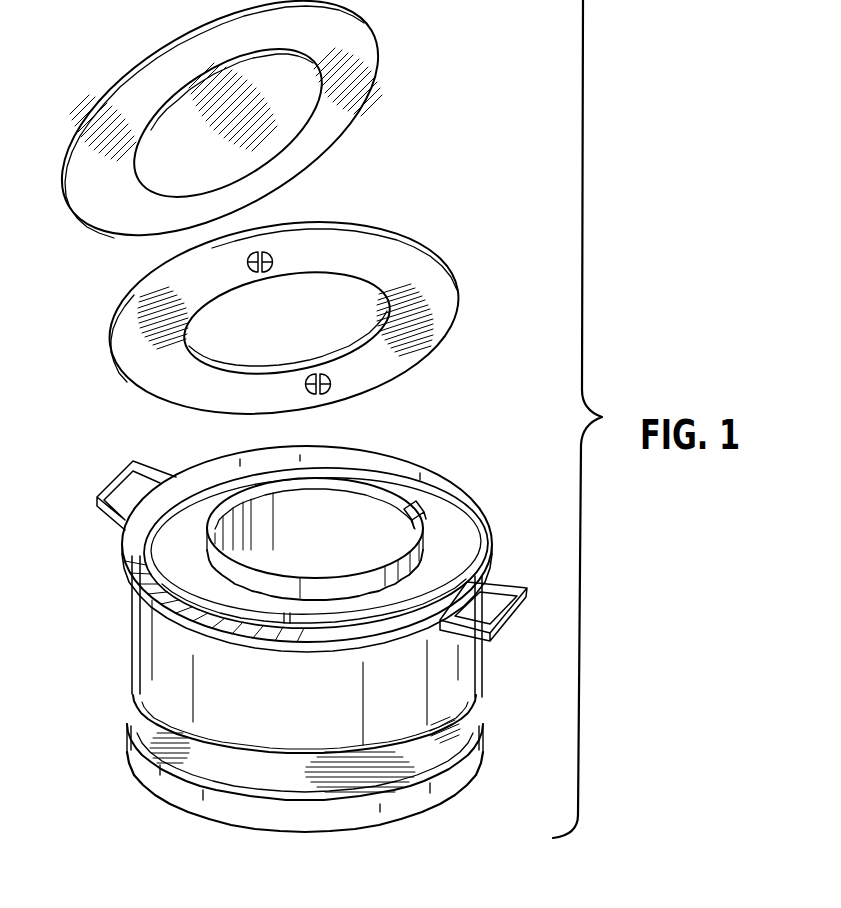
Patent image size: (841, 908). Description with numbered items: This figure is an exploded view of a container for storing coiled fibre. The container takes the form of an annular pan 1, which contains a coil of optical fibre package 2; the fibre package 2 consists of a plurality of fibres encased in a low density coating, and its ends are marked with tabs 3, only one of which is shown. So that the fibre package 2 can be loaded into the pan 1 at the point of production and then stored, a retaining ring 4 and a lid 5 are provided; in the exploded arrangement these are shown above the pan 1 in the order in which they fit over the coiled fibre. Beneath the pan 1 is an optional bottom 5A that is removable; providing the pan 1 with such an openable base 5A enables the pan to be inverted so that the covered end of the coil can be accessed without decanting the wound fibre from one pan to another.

The annular pan 1 is at (132, 650).
The optical fibre package 2 is at (128, 535).
The tab 3 is at (440, 508).
The retaining ring 4 is at (397, 230).
The lid 5 is at (378, 82).
The removable bottom 5A is at (480, 733).